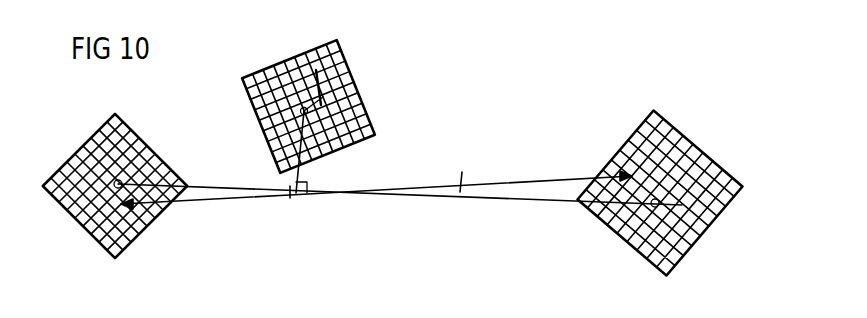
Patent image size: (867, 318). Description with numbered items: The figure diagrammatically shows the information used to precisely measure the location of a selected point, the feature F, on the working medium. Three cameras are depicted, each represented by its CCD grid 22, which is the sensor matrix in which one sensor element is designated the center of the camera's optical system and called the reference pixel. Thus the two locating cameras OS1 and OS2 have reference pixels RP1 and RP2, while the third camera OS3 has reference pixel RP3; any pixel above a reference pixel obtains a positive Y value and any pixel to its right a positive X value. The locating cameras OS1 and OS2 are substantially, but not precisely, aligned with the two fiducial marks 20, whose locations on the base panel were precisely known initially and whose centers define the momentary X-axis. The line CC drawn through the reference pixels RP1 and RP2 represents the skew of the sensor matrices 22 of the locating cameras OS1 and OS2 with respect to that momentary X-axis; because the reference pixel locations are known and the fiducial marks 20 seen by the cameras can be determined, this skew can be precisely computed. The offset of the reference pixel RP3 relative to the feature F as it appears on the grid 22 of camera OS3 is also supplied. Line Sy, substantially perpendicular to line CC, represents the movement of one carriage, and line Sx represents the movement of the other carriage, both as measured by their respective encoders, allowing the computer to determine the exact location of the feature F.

The fiducial mark 20 is at (123, 208).
The CCD grid 22 is at (147, 218).
The locating camera OS1 is at (192, 107).
The locating camera OS2 is at (612, 117).
The camera OS3 is at (428, 65).
The reference pixel RP1 is at (112, 190).
The reference pixel RP2 is at (683, 205).
The reference pixel RP3 is at (301, 112).
The feature F is at (313, 67).
The line SX Sx is at (205, 211).
The line SY Sy is at (299, 176).
The line CC is at (465, 199).